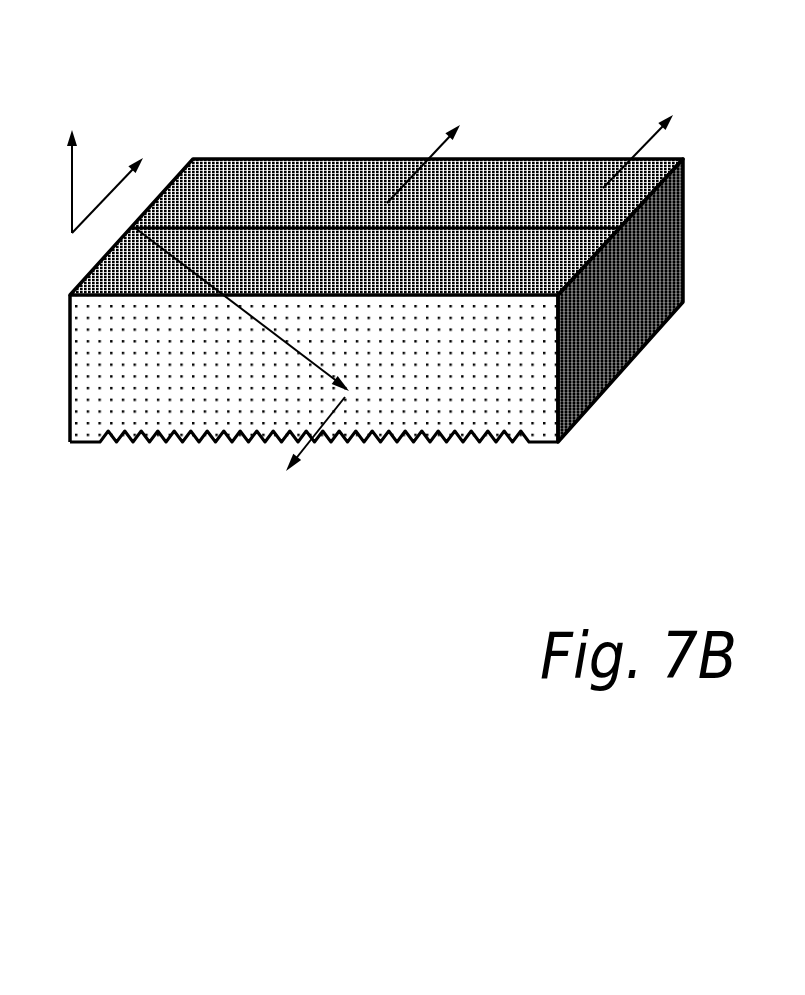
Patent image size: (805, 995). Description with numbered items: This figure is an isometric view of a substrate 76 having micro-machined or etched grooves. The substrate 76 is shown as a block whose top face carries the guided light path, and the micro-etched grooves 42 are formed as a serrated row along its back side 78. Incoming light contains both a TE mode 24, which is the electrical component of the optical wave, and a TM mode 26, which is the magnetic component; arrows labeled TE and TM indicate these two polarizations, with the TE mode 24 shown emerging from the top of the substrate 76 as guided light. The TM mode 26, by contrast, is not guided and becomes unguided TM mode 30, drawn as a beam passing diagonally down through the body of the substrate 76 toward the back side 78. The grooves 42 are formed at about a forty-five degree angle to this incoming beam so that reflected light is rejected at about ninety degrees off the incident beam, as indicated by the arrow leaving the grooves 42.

The TE mode 24 is at (182, 143).
The TM mode 26 is at (90, 98).
The unguided TM mode 30 is at (303, 355).
The micro-etched grooves 42 is at (500, 440).
The substrate 76 is at (683, 228).
The back side of the substrate 78 is at (83, 448).